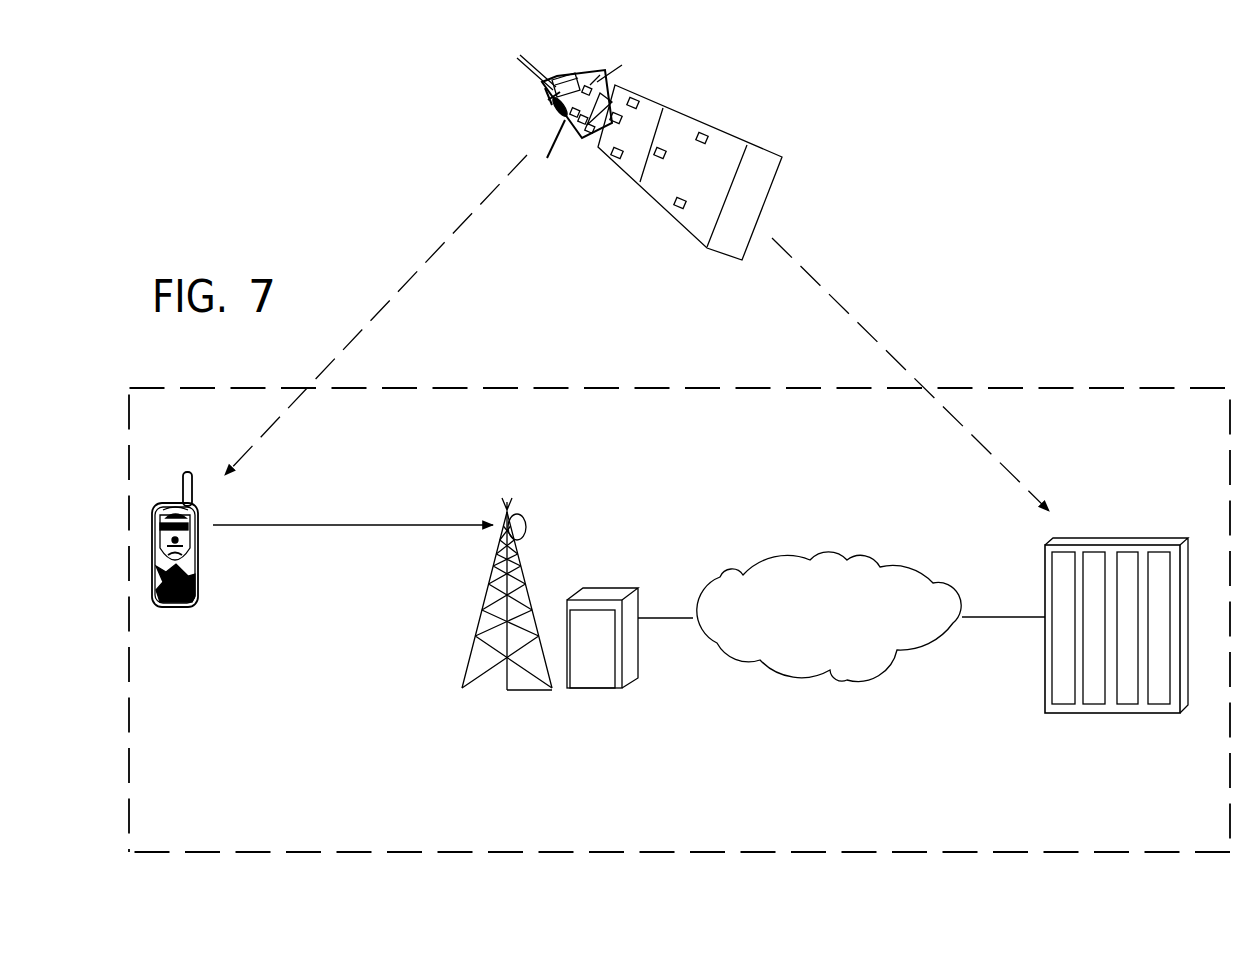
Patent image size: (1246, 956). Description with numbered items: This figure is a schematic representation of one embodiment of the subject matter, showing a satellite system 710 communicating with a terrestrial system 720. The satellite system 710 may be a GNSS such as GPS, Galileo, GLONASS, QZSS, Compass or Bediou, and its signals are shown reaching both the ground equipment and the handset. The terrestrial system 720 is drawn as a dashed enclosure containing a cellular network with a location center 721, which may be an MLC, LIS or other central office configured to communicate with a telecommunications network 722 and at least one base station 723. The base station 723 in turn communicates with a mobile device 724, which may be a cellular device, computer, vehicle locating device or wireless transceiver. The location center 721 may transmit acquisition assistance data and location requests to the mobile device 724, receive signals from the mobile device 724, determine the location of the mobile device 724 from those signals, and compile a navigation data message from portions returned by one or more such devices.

The satellite system 710 is at (805, 205).
The terrestrial system 720 is at (1073, 387).
The location center 721 is at (1100, 523).
The telecommunications network 722 is at (793, 557).
The base station 723 is at (523, 503).
The mobile device 724 is at (171, 498).